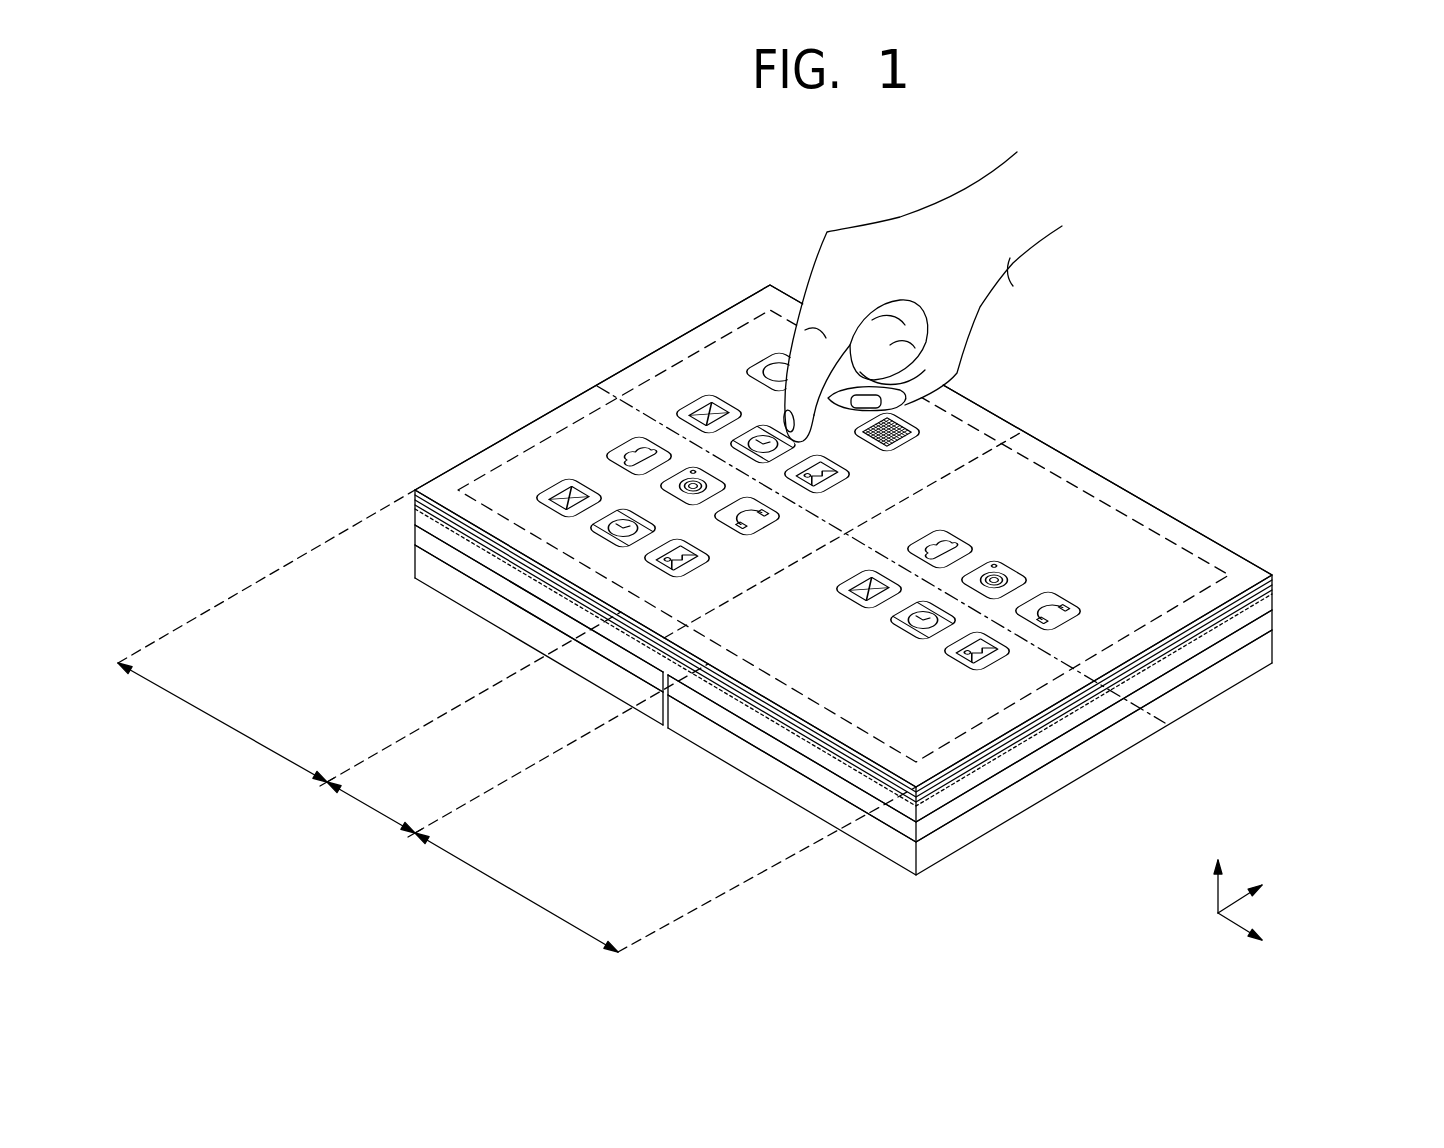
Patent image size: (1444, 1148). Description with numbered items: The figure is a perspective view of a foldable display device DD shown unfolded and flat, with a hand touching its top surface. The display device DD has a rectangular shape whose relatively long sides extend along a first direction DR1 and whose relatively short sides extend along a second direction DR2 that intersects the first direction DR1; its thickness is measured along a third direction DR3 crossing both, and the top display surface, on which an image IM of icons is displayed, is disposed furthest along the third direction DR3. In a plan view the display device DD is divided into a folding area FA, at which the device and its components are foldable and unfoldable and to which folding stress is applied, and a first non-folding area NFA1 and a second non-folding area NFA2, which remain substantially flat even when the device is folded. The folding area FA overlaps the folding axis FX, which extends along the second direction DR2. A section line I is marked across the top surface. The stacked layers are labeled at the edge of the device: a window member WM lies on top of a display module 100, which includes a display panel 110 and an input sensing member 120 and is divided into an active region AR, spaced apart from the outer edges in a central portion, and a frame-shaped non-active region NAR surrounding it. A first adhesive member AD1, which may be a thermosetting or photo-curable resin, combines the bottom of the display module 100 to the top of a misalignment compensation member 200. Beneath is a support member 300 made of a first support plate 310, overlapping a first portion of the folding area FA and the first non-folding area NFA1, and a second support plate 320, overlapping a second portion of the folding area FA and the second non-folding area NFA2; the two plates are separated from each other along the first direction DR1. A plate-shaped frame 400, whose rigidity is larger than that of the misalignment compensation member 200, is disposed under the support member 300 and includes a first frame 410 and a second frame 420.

The display device DD is at (1216, 367).
The display module 100 is at (921, 651).
The display panel 110 is at (1262, 590).
The input sensing member 120 is at (1262, 582).
The window member WM is at (1267, 577).
The first adhesive member AD1 is at (1258, 600).
The misalignment compensation member 200 is at (1250, 615).
The support member 300 is at (843, 683).
The first support plate 310 is at (945, 726).
The second support plate 320 is at (623, 665).
The frame 400 is at (816, 710).
The first frame 410 is at (946, 752).
The second frame 420 is at (492, 615).
The image IM is at (687, 403).
The folding axis FX is at (1020, 433).
The active region AR is at (1096, 532).
The non-active region NAR is at (1162, 521).
The folding area FA is at (514, 724).
The first non-folding area NFA1 is at (665, 869).
The second non-folding area NFA2 is at (266, 636).
The section line I-I' I is at (597, 386).
The first direction DR1 is at (1268, 937).
The second direction DR2 is at (1268, 889).
The third direction DR3 is at (1215, 870).